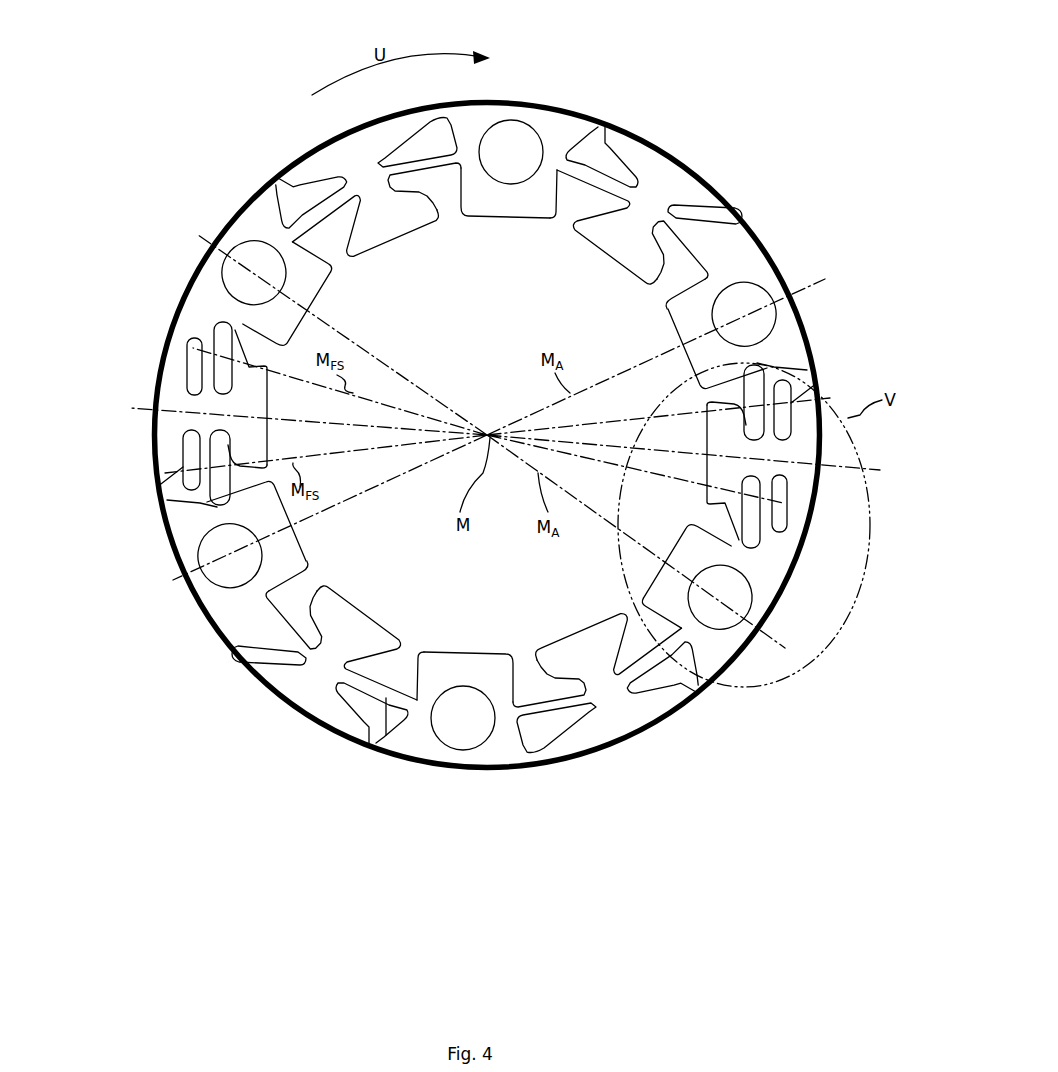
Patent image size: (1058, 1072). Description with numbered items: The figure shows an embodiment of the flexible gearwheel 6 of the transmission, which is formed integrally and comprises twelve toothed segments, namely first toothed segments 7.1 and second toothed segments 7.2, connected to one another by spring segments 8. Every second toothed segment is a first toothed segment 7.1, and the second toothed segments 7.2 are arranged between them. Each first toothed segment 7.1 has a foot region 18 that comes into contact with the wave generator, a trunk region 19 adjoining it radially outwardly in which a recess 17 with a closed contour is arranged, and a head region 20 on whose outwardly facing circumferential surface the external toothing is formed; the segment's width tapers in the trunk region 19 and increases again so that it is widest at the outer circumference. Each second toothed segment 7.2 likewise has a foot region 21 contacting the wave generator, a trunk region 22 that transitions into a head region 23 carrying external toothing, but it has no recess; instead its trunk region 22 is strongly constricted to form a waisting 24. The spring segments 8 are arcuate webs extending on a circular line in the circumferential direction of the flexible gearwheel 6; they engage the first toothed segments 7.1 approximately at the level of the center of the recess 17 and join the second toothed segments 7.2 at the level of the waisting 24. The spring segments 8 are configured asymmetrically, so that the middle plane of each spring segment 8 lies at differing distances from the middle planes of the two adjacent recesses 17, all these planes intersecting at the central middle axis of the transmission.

The flexible gearwheel 6 is at (128, 136).
The first toothed segment 7.1 is at (568, 152).
The second toothed segment 7.2 is at (300, 165).
The spring segment 8 is at (417, 152).
The recess 17 is at (500, 135).
The foot region 18 is at (487, 205).
The trunk region 19 is at (552, 152).
The head region 20 is at (517, 115).
The foot region 21 is at (373, 227).
The trunk region 22 is at (490, 424).
The waisting 24 is at (360, 155).
The head region 23 is at (373, 135).